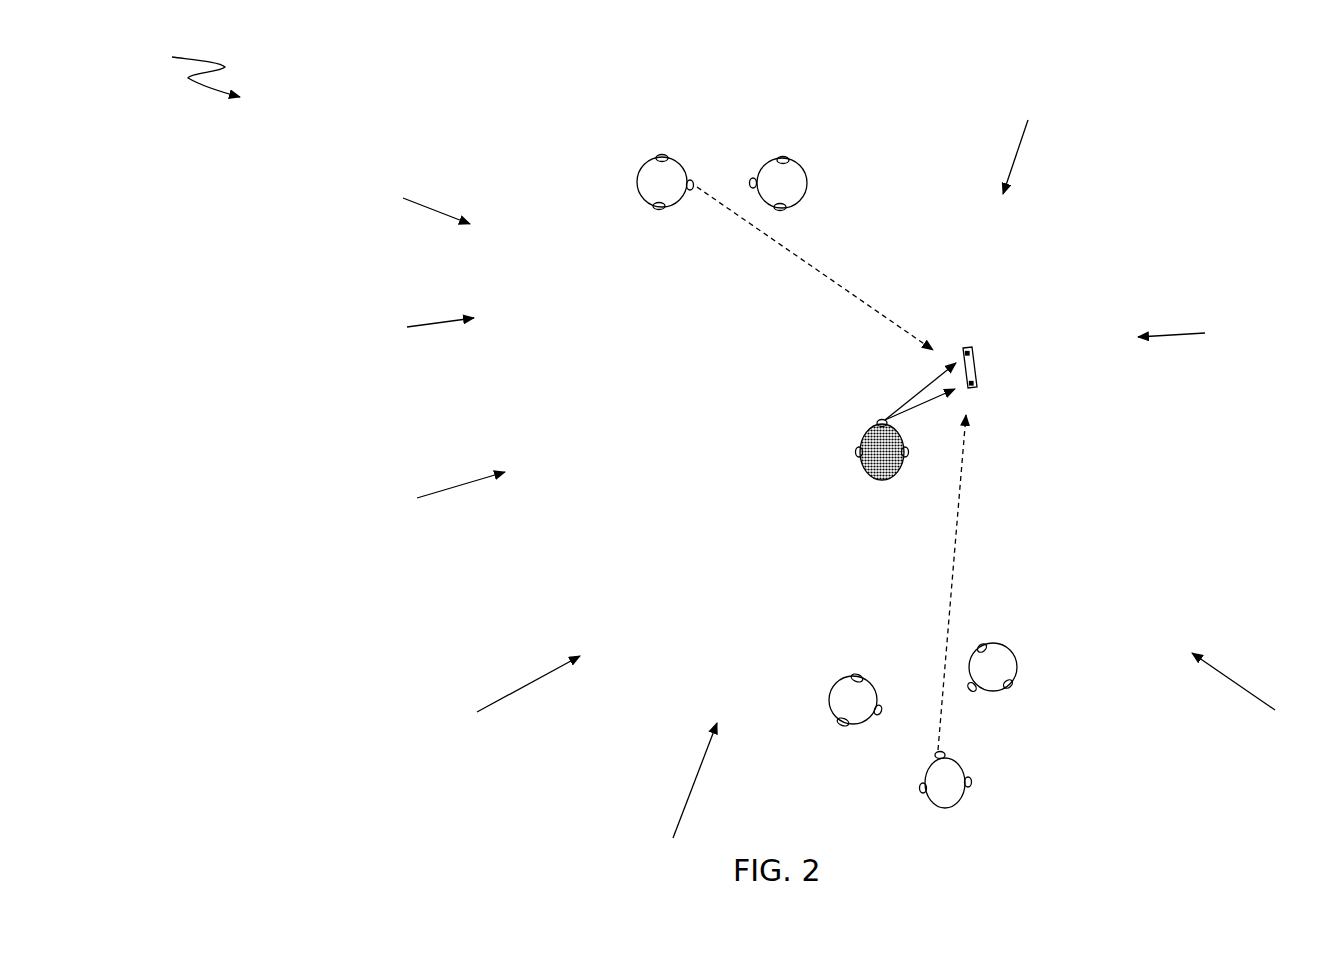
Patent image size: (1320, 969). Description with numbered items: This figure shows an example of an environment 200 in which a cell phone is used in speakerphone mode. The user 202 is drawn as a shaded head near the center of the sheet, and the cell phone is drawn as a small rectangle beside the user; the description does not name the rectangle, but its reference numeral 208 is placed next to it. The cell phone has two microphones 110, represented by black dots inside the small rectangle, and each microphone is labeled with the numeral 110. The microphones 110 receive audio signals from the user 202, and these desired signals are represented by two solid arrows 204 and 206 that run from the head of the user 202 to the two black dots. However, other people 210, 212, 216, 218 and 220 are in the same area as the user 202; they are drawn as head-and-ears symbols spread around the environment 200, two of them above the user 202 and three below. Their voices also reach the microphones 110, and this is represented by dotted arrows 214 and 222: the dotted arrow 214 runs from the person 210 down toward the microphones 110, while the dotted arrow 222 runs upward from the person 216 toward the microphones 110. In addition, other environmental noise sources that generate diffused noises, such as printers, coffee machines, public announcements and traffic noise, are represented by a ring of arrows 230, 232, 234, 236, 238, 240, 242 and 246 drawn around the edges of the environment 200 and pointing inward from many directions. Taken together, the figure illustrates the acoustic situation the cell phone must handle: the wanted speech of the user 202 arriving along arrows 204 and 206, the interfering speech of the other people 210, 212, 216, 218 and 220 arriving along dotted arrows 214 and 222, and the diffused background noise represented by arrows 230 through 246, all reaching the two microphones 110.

The environment 200 is at (182, 71).
The user 202 is at (858, 452).
The audio signal arrow 204 is at (903, 413).
The audio signal arrow 206 is at (890, 405).
The hearing device 208 is at (977, 363).
The microphones 110 is at (970, 348).
The other people 210 is at (637, 180).
The other people 212 is at (803, 173).
The dotted arrow 214 is at (842, 290).
The other people 216 is at (960, 803).
The other people 218 is at (1017, 677).
The other people 220 is at (832, 718).
The dotted arrow 222 is at (952, 588).
The environmental noise source arrow 230 is at (423, 205).
The environmental noise source arrow 232 is at (423, 323).
The environmental noise source arrow 234 is at (452, 490).
The environmental noise source arrow 236 is at (493, 700).
The environmental noise source arrow 238 is at (693, 778).
The environmental noise source arrow 240 is at (1015, 147).
The environmental noise source arrow 242 is at (1158, 333).
The environmental noise source arrow 246 is at (1267, 705).